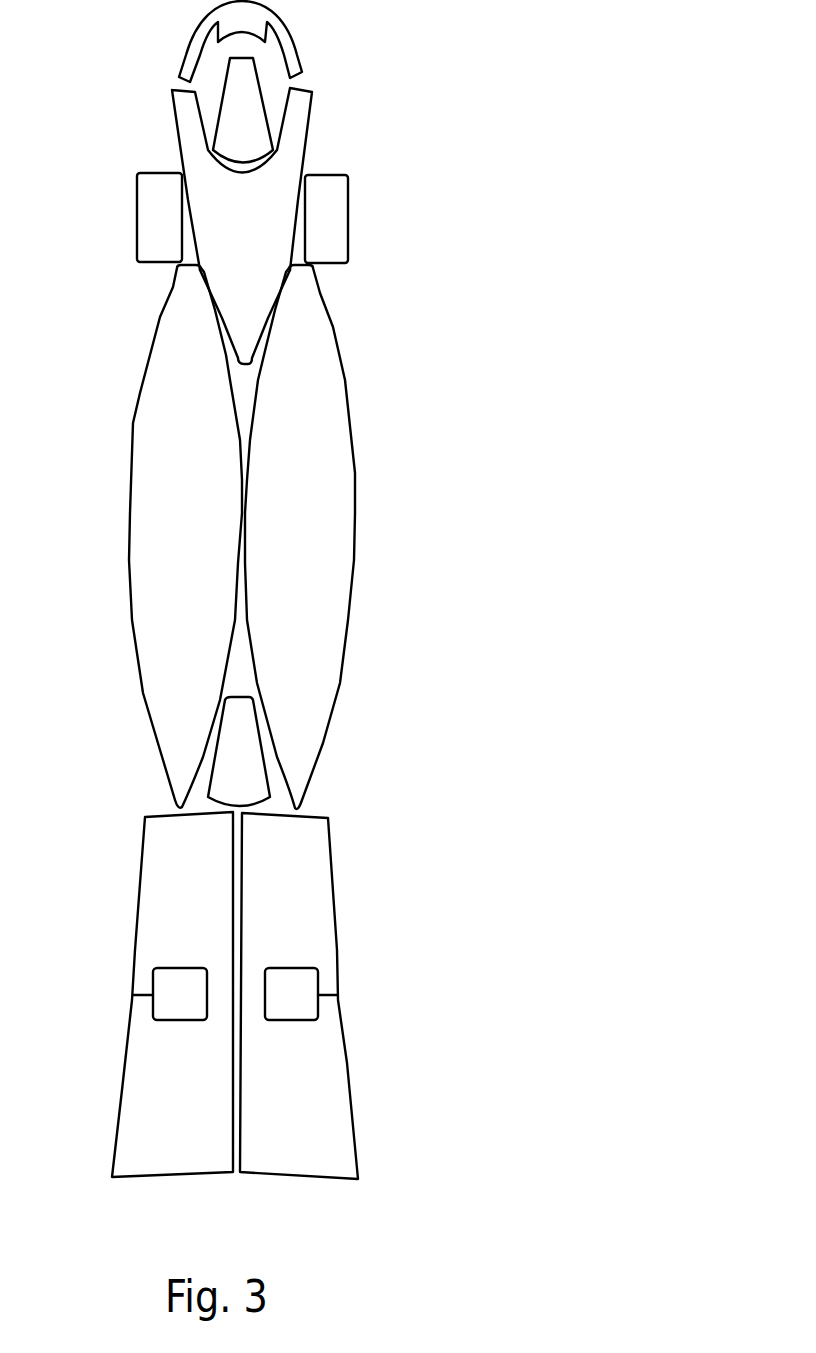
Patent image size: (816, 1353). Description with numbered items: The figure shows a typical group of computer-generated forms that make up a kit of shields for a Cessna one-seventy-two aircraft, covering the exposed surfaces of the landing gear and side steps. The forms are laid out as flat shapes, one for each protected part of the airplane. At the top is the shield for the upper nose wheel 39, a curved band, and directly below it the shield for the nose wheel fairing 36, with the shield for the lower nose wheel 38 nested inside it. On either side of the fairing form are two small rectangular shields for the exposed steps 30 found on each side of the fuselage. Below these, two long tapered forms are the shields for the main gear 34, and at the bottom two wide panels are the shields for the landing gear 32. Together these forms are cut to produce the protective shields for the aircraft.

The exposed steps 30 is at (135, 200).
The landing gear 32 is at (345, 950).
The main gear 34 is at (347, 468).
The nose wheel fairing 36 is at (183, 117).
The lower nose wheel 38 is at (265, 97).
The upper nose wheel 39 is at (285, 14).